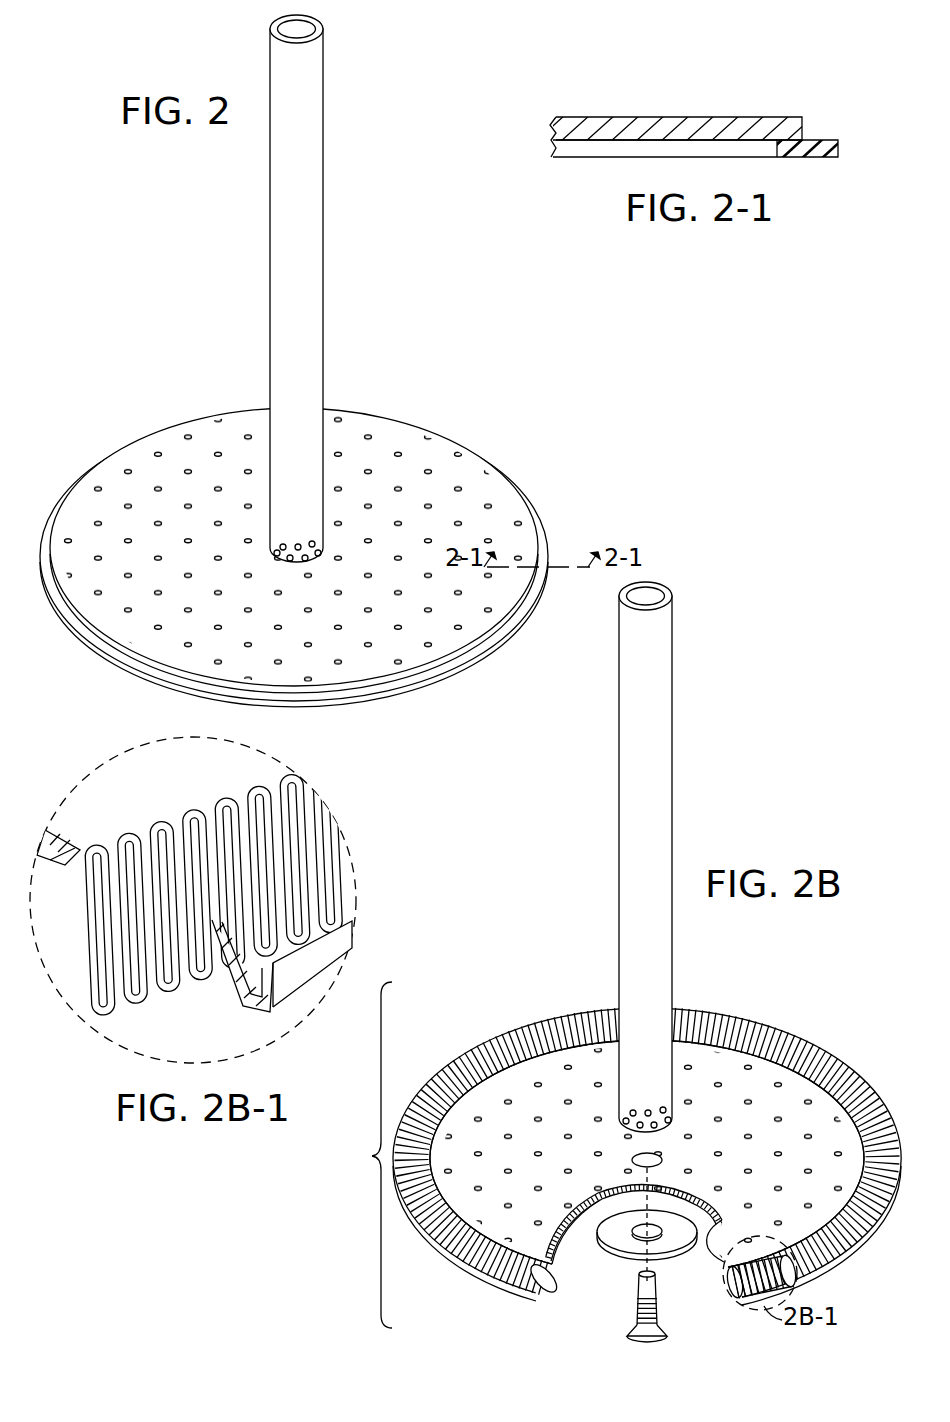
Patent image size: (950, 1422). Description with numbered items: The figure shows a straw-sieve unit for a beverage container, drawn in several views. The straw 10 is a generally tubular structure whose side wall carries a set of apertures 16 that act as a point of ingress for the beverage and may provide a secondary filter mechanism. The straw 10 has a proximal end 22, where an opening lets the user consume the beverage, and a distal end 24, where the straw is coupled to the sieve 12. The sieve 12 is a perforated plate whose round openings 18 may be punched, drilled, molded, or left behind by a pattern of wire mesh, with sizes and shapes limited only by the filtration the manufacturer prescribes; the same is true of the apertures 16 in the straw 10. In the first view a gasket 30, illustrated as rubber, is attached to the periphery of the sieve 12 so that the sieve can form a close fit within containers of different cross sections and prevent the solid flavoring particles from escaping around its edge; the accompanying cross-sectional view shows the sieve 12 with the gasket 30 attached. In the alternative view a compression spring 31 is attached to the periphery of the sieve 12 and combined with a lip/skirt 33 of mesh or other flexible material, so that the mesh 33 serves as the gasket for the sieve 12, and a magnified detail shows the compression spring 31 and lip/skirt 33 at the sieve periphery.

In FIG. 2, the straw 10 is at (323, 192).
In FIG. 2B, the straw 10 is at (672, 755).
In FIG. 2, the sieve 12 is at (355, 409).
In FIG. 2-1, the sieve 12 is at (680, 117).
In FIG. 2B, the sieve 12 is at (787, 1151).
In FIG. 2, the apertures 16 is at (298, 544).
In FIG. 2B, the apertures 16 is at (649, 1110).
In FIG. 2, the openings 18 is at (185, 435).
In FIG. 2B, the openings 18 is at (805, 1101).
In FIG. 2, the proximal end 22 is at (305, 29).
In FIG. 2B, the proximal end 22 is at (657, 596).
In FIG. 2, the distal end 24 is at (297, 563).
In FIG. 2B, the distal end 24 is at (657, 1128).
In FIG. 2, the gasket 30 is at (437, 688).
In FIG. 2-1, the gasket 30 is at (817, 158).
In FIG. 2B, the compression spring 31 is at (762, 1027).
In FIG. 2B-1, the lip/skirt 33 is at (315, 971).